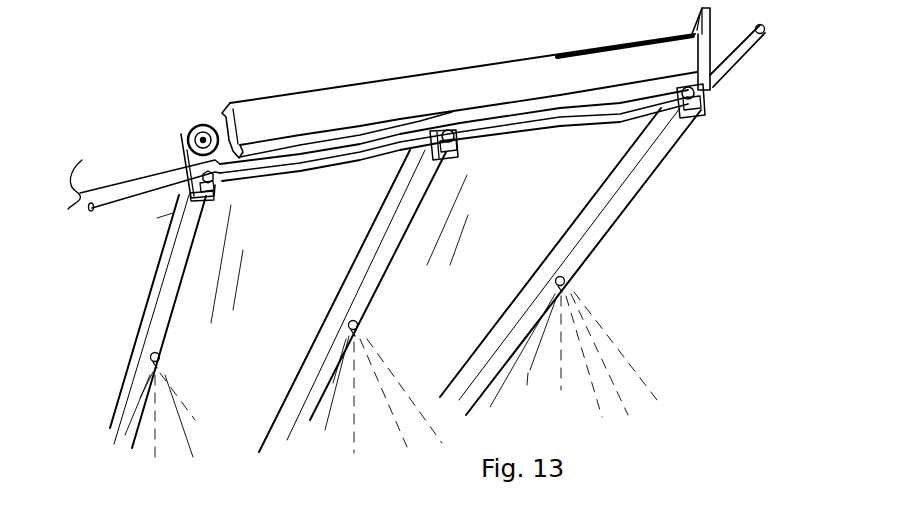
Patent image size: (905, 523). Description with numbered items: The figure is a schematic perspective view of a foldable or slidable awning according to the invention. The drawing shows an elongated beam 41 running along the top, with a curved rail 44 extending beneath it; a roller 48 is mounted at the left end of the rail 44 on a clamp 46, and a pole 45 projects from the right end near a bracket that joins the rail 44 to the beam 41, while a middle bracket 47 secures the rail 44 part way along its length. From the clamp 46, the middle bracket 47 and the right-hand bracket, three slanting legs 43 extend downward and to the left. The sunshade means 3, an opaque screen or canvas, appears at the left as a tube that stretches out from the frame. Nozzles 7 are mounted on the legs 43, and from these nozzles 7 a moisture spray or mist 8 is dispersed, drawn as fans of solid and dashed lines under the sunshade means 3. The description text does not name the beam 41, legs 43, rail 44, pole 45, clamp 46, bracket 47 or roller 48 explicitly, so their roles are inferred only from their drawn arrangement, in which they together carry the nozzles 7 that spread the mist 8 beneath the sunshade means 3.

The sunshade means 3 is at (144, 179).
The nozzle 7 is at (151, 358).
The moisture spray or mist 8 is at (622, 348).
The support beam 41 is at (334, 103).
The leg 43 is at (155, 280).
The rail 44 is at (347, 165).
The pole 45 is at (737, 53).
The clamp bracket 46 is at (215, 190).
The middle bracket 47 is at (458, 147).
The roller 48 is at (201, 124).